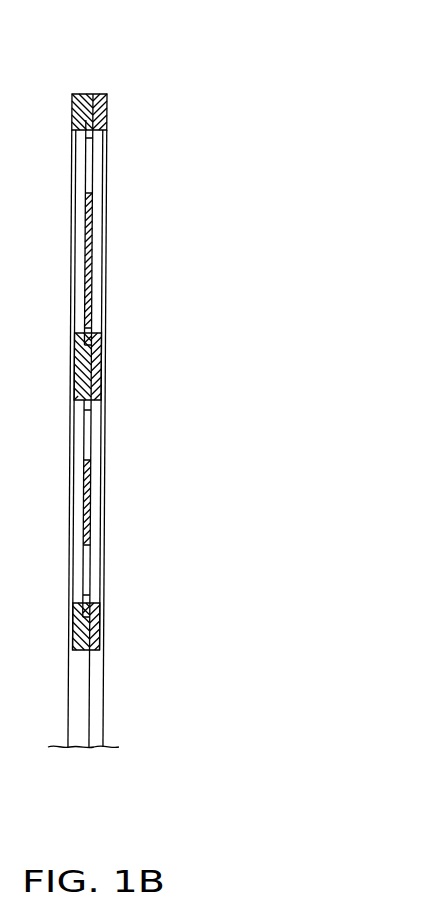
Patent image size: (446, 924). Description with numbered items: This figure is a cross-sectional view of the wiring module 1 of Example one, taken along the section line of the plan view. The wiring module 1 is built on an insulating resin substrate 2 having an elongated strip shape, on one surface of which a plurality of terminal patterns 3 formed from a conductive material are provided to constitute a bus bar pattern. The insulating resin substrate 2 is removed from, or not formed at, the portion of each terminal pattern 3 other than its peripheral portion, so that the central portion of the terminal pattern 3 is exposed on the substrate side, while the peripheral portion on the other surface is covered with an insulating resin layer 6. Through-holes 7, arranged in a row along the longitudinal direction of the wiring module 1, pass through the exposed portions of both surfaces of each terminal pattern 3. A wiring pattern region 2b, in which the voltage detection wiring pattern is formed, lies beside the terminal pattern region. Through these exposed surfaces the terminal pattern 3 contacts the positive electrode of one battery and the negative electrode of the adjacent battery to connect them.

The wiring module 1 is at (84, 79).
The insulating resin substrate 2 is at (107, 120).
The wiring pattern region 2b is at (105, 680).
The terminal pattern 3 is at (87, 237).
The insulating resin layer 6 is at (75, 156).
The through-hole 7 is at (83, 165).